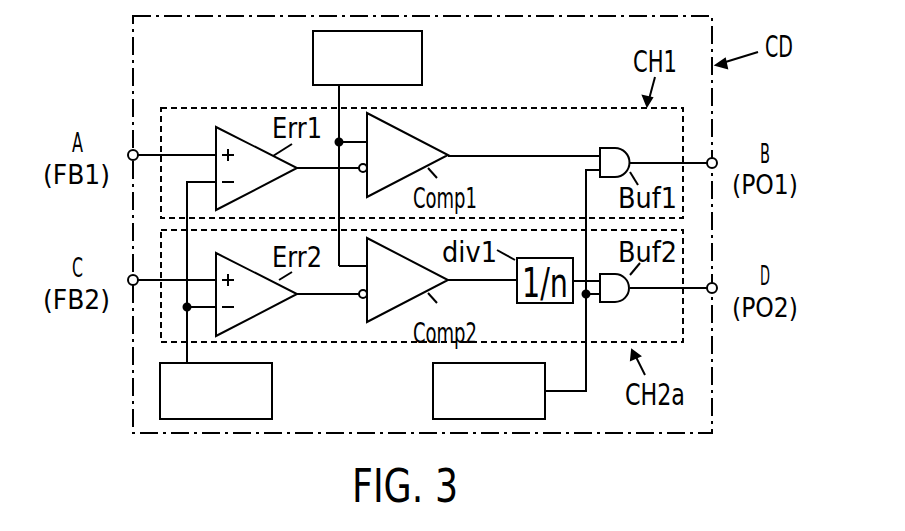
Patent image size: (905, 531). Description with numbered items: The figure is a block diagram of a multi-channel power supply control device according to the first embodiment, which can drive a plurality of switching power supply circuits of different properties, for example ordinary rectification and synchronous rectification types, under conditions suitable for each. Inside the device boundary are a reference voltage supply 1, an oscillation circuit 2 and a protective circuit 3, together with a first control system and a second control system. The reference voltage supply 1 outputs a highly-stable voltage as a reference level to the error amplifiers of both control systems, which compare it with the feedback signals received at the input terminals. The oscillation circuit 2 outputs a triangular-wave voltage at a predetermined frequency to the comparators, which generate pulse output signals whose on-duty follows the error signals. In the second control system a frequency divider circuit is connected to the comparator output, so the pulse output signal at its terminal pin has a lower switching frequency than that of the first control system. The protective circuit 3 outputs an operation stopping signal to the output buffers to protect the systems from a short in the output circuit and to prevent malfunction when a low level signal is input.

The reference voltage supply 1 is at (275, 388).
The oscillation circuit 2 is at (422, 53).
The protective circuit 3 is at (433, 385).